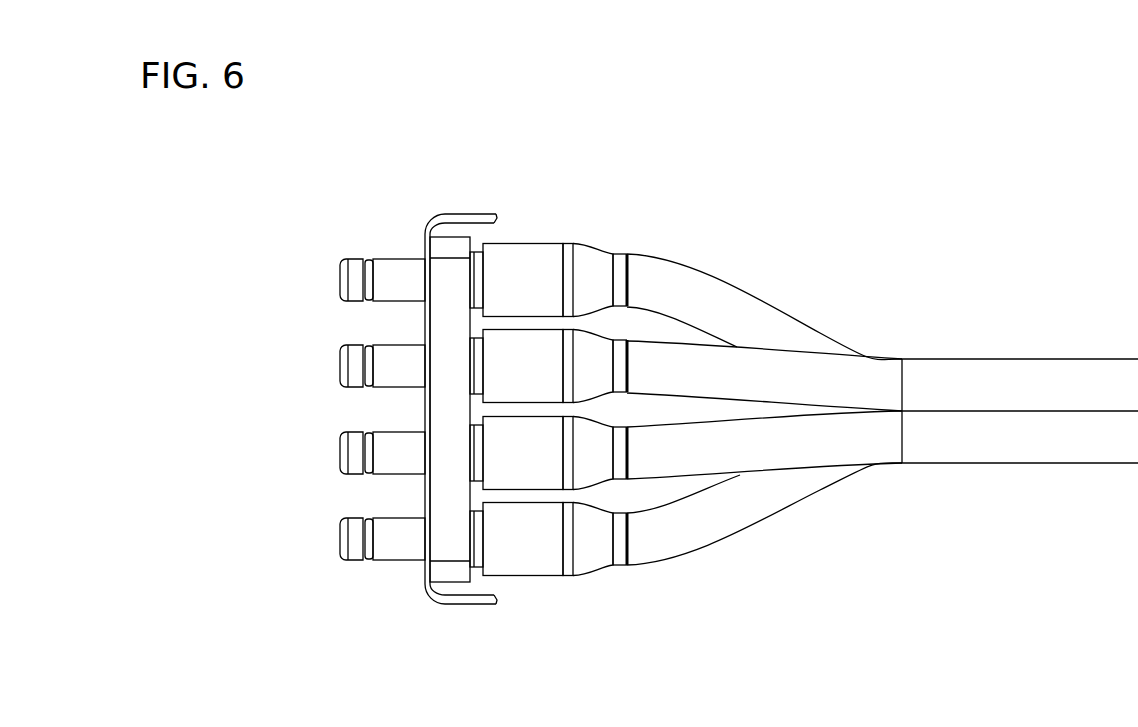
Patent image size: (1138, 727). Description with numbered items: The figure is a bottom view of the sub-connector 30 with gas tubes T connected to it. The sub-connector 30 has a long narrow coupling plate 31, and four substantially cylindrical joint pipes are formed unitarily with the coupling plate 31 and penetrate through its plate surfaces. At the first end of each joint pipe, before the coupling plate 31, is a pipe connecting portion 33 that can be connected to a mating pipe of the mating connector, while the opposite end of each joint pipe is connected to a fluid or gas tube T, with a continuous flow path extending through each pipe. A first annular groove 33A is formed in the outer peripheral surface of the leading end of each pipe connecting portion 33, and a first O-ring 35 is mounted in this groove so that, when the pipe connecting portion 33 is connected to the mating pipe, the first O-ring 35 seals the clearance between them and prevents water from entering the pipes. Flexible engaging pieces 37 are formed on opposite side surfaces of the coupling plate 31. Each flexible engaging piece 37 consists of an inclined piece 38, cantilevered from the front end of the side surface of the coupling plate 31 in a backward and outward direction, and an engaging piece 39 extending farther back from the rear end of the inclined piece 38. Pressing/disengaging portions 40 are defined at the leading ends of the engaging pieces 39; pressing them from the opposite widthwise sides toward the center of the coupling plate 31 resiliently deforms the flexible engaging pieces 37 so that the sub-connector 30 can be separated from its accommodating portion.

The sub-connector 30 is at (383, 195).
The coupling plate 31 is at (448, 303).
The pipe connecting portion 33 is at (385, 268).
The first annular groove 33A is at (364, 376).
The first O-ring 35 is at (366, 302).
The flexible engaging piece 37 is at (446, 212).
The inclined piece 38 is at (432, 222).
The engaging piece 39 is at (464, 215).
The pressing/disengaging portion 40 is at (490, 216).
The gas tube T is at (710, 290).